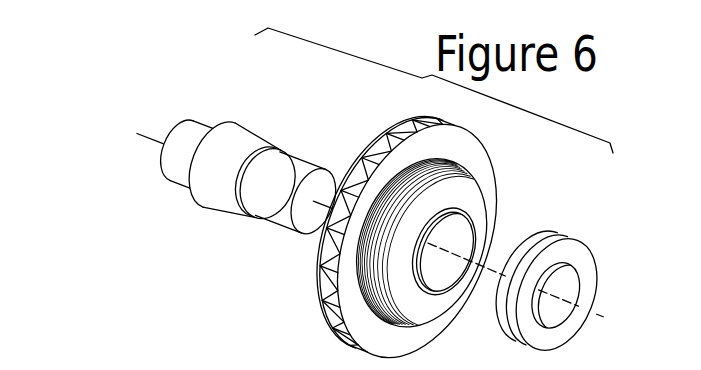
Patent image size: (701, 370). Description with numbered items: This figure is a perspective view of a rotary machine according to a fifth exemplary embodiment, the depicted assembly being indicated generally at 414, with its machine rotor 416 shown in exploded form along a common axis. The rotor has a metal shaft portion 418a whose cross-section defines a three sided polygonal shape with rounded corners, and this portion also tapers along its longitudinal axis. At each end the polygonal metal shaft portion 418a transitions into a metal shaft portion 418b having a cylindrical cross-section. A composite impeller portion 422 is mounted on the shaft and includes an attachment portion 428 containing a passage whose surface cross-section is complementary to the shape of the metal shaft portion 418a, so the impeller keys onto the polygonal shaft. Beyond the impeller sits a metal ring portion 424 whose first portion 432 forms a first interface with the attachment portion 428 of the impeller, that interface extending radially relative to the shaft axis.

The rotor assembly 414 is at (70, 148).
The machine rotor 416 is at (315, 85).
The metal shaft portion 418a is at (237, 148).
The metal shaft portion 418b is at (299, 160).
The composite impeller portion 422 is at (425, 125).
The metal ring portion 424 is at (583, 248).
The attachment portion 428 is at (457, 240).
The first portion 432 is at (82, 364).